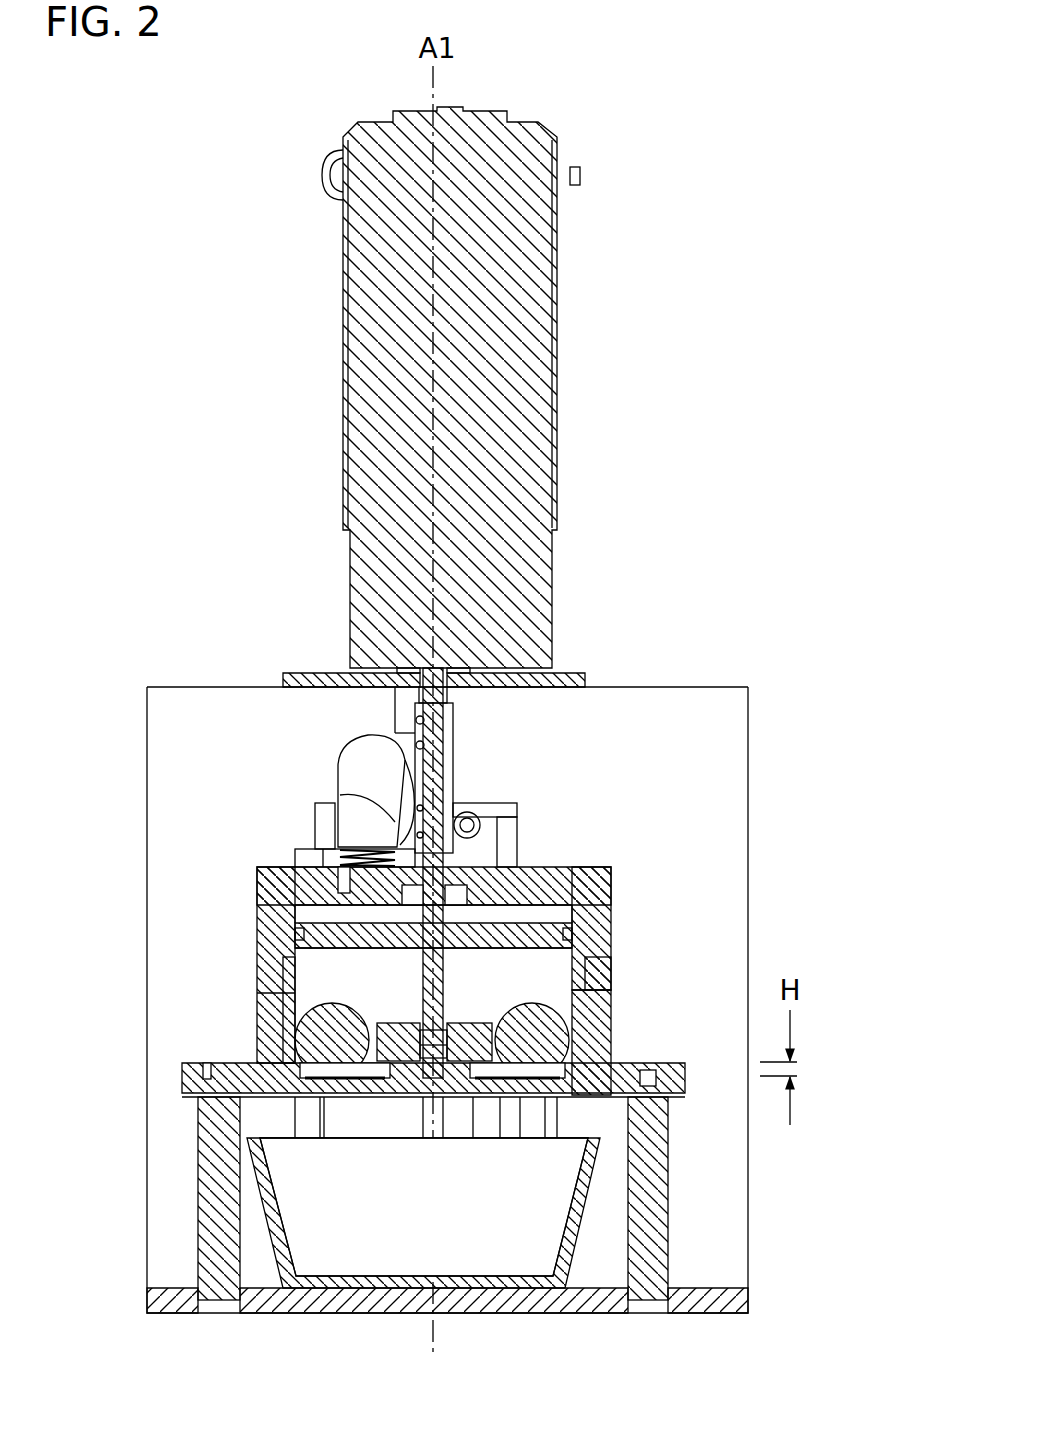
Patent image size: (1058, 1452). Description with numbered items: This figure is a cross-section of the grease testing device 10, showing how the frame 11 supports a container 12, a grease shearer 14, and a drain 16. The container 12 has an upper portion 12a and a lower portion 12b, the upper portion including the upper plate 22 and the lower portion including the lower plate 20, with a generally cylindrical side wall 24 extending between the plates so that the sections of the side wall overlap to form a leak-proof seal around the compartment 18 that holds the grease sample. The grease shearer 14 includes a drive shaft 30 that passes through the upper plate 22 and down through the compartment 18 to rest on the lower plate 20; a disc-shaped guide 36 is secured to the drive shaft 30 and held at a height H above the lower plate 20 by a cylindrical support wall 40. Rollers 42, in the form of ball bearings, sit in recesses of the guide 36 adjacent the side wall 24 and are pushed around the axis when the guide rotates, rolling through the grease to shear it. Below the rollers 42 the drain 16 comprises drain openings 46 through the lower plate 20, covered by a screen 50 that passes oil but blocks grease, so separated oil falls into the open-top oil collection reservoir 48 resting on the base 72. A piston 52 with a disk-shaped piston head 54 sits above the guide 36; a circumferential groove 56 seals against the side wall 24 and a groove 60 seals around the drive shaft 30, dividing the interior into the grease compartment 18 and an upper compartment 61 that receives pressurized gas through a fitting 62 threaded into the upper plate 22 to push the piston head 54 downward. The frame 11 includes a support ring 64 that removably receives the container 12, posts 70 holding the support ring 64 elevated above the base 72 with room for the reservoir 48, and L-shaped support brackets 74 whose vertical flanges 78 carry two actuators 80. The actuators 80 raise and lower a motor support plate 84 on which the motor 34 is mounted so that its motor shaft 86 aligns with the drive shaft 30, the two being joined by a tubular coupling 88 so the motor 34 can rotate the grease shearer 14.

The grease testing device 10 is at (808, 260).
The frame 11 is at (850, 768).
The container 12 is at (600, 866).
The upper portion 12a is at (615, 897).
The lower portion 12b is at (615, 1013).
The grease shearer 14 is at (490, 1020).
The drain 16 is at (375, 1098).
The compartment 18 is at (358, 992).
The lower plate 20 is at (565, 1085).
The upper plate 22 is at (540, 865).
The side wall 24 is at (597, 925).
The drive shaft 30 is at (443, 800).
The motor 34 is at (515, 292).
The guide 36 is at (390, 1032).
The support wall 40 is at (455, 1098).
The roller 42 is at (459, 1012).
The drain openings 46 is at (520, 1098).
The oil collection reservoir 48 is at (585, 1220).
The screen 50 is at (567, 1065).
The piston 52 is at (305, 918).
The piston head 54 is at (296, 948).
The circumferential groove 56 is at (300, 928).
The groove 60 is at (563, 880).
The upper compartment 61 is at (611, 873).
The fitting 62 is at (360, 770).
The support ring 64 is at (685, 1068).
The posts 70 is at (198, 1175).
The base 72 is at (745, 1290).
The support brackets 74 is at (752, 724).
The vertical flange 78 is at (706, 700).
The actuators 80 is at (516, 811).
The motor support plate 84 is at (583, 672).
The motor shaft 86 is at (447, 695).
The coupling 88 is at (458, 727).